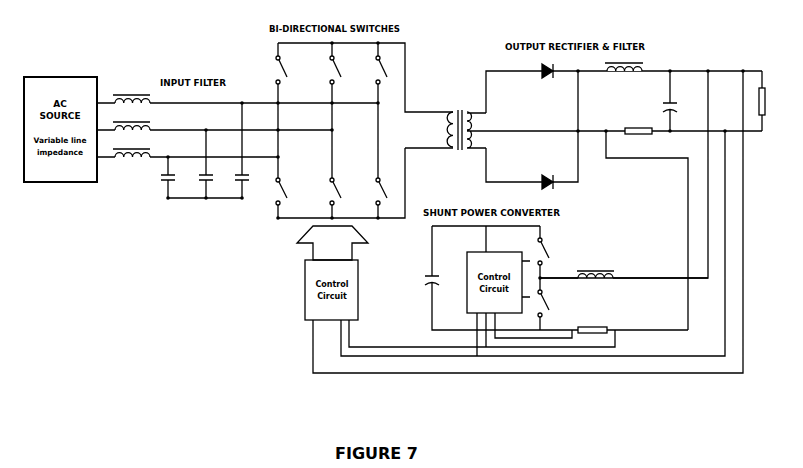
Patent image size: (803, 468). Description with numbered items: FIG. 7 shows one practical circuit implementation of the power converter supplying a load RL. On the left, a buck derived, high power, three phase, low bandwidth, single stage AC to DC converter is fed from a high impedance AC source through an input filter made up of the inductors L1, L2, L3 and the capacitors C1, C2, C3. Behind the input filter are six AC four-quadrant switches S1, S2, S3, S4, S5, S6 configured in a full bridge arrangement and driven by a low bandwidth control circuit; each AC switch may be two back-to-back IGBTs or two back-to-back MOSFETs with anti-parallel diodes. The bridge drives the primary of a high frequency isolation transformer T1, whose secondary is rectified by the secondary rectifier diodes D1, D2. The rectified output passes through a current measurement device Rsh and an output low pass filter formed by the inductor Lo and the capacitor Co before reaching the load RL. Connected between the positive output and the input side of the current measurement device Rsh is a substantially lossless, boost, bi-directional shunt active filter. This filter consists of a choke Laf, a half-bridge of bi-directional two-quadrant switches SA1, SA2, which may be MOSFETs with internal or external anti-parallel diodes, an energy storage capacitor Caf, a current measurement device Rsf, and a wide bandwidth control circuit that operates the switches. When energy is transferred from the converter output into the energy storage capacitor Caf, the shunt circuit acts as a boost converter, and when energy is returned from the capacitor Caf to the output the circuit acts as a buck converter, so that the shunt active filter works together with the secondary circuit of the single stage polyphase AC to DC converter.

The input filter inductor L1 is at (131, 93).
The input filter inductor L2 is at (131, 120).
The input filter inductor L3 is at (131, 147).
The input filter capacitor C1 is at (248, 150).
The input filter capacitor C2 is at (212, 164).
The input filter capacitor C3 is at (174, 177).
The AC switch S1 is at (289, 70).
The AC switch S2 is at (289, 191).
The AC switch S3 is at (343, 70).
The AC switch S4 is at (343, 191).
The AC switch S5 is at (388, 70).
The AC switch S6 is at (388, 191).
The isolation transformer T1 is at (604, 125).
The secondary rectifier diode D1 is at (547, 80).
The secondary rectifier diode D2 is at (547, 172).
The output filter inductor Lo is at (624, 77).
The output filter capacitor Co is at (677, 101).
The current measurement device Rsh is at (638, 122).
The load RL is at (768, 101).
The energy storage capacitor Caf is at (419, 276).
The bi-directional switch SA1 is at (554, 258).
The bi-directional switch SA2 is at (554, 310).
The choke Laf is at (624, 266).
The current measurement device Rsf is at (592, 323).